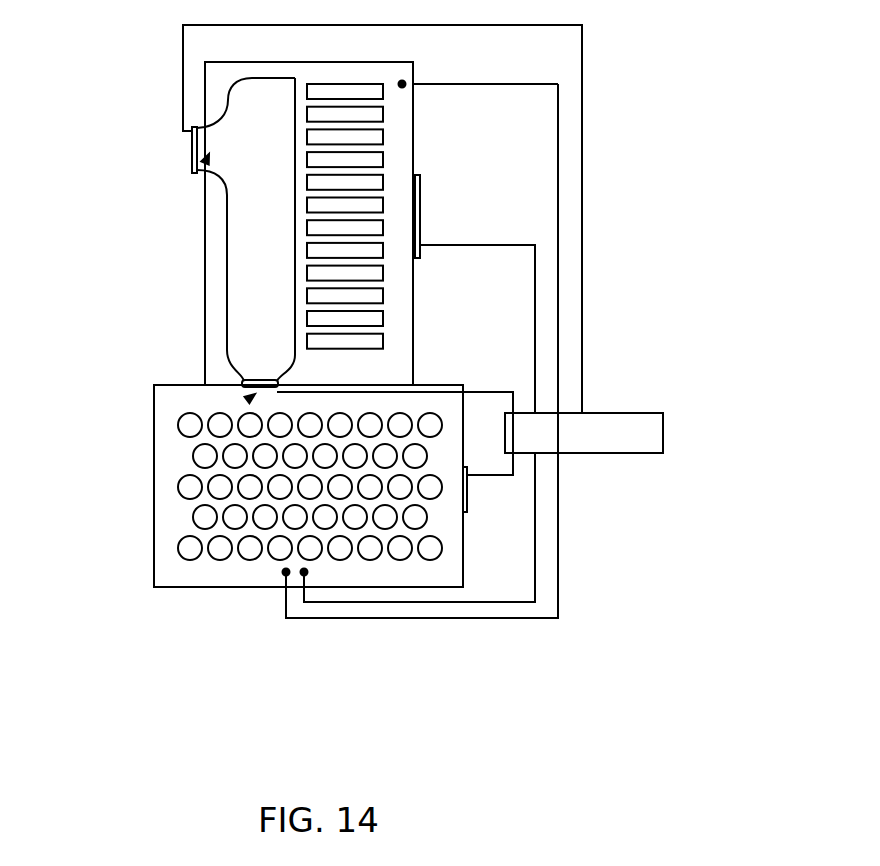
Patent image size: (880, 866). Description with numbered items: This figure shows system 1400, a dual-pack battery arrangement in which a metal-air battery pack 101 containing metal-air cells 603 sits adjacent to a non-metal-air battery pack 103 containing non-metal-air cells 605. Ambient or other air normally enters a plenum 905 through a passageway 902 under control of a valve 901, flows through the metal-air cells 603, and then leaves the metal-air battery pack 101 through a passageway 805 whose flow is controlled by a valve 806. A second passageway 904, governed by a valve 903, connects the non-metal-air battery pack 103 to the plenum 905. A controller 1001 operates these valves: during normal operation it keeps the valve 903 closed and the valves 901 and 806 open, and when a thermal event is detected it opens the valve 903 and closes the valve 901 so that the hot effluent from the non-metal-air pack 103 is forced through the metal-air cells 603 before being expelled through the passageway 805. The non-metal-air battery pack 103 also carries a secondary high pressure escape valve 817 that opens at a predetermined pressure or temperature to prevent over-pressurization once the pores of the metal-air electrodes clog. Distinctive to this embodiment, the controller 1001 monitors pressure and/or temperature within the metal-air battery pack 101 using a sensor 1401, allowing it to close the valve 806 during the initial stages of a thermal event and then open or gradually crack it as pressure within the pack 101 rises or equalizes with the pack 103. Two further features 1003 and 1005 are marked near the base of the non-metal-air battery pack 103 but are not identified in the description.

The metal-air battery pack 101 is at (204, 242).
The non-metal-air battery pack 103 is at (154, 437).
The metal-air cells 603 is at (345, 160).
The non-metal-air cells 605 is at (250, 547).
The passageway 805 is at (410, 198).
The valve 806 is at (422, 250).
The secondary high pressure escape valve 817 is at (468, 490).
The valve 901 is at (193, 164).
The passageway 902 is at (207, 160).
The valve 903 is at (278, 383).
The passageway 904 is at (251, 397).
The plenum 905 is at (233, 295).
The controller 1001 is at (587, 454).
The power connection 1003 is at (303, 576).
The ground connection 1005 is at (284, 574).
The system 1400 is at (667, 642).
The sensor 1401 is at (406, 86).